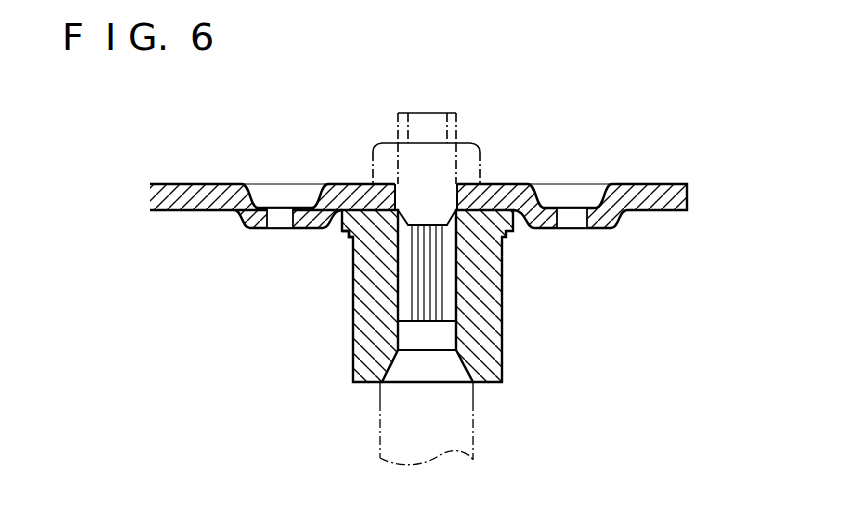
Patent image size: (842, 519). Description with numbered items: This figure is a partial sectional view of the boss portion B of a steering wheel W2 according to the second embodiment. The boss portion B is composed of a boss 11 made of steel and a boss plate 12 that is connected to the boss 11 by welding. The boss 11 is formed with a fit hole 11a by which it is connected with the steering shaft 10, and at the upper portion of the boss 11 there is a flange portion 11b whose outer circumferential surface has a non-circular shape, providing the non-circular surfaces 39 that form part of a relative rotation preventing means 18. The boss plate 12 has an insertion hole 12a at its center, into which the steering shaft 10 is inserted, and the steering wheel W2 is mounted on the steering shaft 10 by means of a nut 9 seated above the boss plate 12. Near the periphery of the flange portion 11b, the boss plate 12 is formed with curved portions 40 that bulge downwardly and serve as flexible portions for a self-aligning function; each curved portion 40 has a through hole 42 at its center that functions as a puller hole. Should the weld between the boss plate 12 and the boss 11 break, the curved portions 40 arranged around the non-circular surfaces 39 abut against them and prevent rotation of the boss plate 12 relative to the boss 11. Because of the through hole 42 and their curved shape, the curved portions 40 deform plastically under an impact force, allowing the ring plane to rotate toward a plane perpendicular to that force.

The nut 9 is at (374, 148).
The steering shaft 10 is at (397, 434).
The boss 11 is at (504, 351).
The fit hole 11a is at (399, 304).
The flange portion 11b is at (345, 238).
The boss plate 12 is at (668, 194).
The insertion hole 12a is at (452, 200).
The relative rotation preventing means 18 is at (180, 291).
The non-circular surface 39 is at (340, 235).
The curved portion 40 is at (307, 230).
The through hole 42 is at (281, 218).
The boss portion B is at (517, 386).
The steering wheel W2 is at (609, 351).